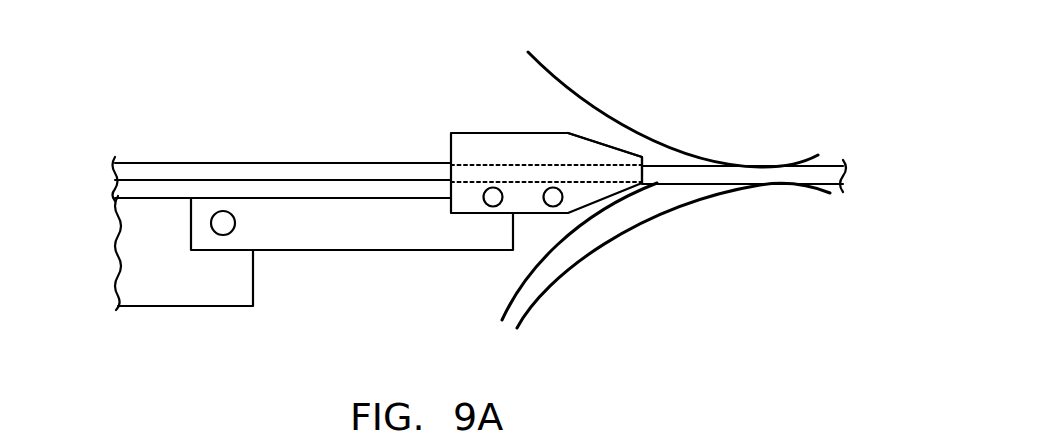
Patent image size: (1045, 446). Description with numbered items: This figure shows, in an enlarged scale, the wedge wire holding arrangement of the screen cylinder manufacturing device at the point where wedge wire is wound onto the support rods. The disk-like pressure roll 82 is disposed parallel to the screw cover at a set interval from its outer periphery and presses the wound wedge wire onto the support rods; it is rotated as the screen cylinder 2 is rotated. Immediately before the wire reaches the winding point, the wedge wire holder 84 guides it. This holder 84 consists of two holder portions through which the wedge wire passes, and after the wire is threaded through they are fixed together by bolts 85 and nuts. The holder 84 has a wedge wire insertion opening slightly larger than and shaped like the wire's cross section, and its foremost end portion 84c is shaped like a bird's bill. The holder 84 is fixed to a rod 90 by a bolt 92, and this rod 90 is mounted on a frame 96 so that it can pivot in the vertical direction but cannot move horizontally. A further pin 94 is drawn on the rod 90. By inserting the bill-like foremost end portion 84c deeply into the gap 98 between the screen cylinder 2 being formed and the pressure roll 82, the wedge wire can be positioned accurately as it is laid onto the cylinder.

The screen cylinder 2 is at (557, 307).
The pressure roll 82 is at (560, 67).
The wedge wire holder 84 is at (465, 144).
The foremost end portion 84c is at (612, 158).
The bolt 85 is at (550, 206).
The rod 90 is at (313, 223).
The bolt 92 is at (484, 203).
The pin 94 is at (223, 223).
The frame 96 is at (160, 252).
The gap 98 is at (600, 135).